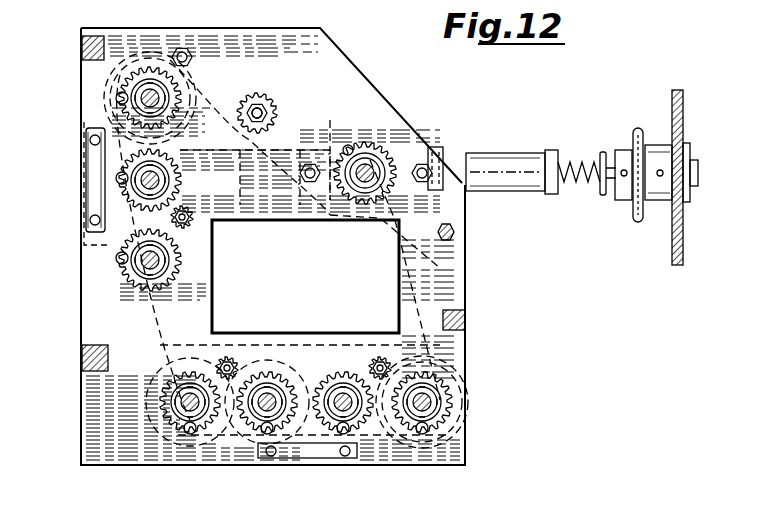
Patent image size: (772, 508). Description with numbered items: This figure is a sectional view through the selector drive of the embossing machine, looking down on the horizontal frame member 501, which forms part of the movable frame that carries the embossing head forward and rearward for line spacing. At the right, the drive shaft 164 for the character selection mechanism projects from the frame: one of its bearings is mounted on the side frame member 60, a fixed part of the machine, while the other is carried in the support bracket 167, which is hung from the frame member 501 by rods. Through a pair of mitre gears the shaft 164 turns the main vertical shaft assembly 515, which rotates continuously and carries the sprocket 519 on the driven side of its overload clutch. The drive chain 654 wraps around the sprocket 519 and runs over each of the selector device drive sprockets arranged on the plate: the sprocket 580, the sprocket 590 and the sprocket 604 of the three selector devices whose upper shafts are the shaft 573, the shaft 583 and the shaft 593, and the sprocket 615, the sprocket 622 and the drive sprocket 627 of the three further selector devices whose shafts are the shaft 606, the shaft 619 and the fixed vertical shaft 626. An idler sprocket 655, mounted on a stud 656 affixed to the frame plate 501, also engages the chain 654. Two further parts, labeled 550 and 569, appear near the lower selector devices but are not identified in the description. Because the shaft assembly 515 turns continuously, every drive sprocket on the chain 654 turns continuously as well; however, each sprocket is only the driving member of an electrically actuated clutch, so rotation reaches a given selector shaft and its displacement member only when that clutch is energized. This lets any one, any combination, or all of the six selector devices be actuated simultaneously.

The side frame member 60 is at (683, 112).
The drive shaft 164 is at (558, 145).
The support bracket 167 is at (442, 137).
The horizontal frame member 501 is at (457, 293).
The vertical shaft assembly 515 is at (367, 170).
The sprocket 519 is at (402, 239).
The shaft hub 550 is at (426, 403).
The gear 569 is at (420, 372).
The upper shaft 573 is at (196, 408).
The drive sprocket 580 is at (188, 370).
The upper shaft 583 is at (270, 408).
The sprocket 590 is at (284, 372).
The shaft 593 is at (348, 408).
The sprocket 604 is at (338, 372).
The upper shaft 606 is at (150, 260).
The sprocket 615 is at (180, 268).
The upper shaft 619 is at (150, 180).
The sprocket 622 is at (202, 186).
The fixed vertical shaft 626 is at (150, 98).
The drive sprocket 627 is at (192, 95).
The drive chain 654 is at (440, 267).
The idler sprocket 655 is at (262, 95).
The stud 656 is at (262, 112).